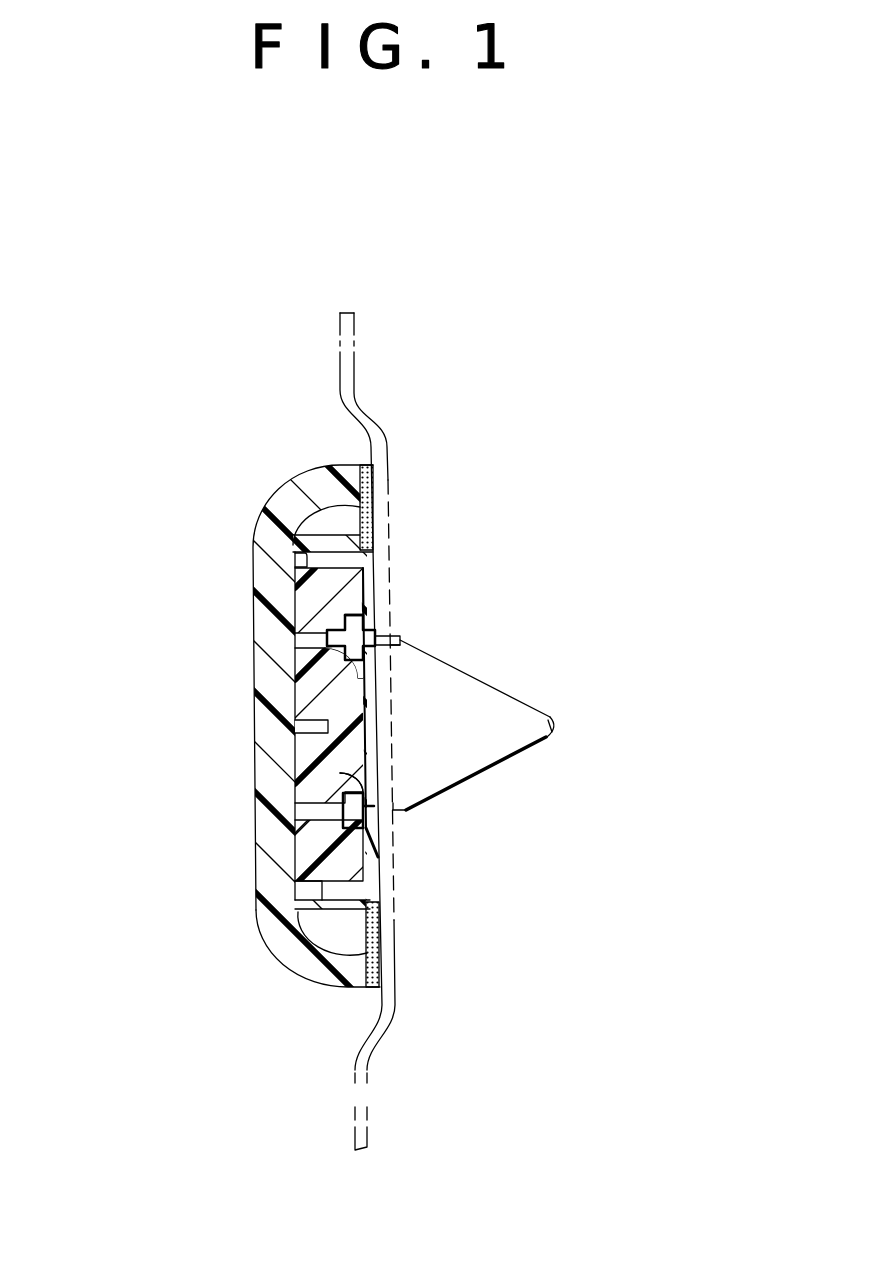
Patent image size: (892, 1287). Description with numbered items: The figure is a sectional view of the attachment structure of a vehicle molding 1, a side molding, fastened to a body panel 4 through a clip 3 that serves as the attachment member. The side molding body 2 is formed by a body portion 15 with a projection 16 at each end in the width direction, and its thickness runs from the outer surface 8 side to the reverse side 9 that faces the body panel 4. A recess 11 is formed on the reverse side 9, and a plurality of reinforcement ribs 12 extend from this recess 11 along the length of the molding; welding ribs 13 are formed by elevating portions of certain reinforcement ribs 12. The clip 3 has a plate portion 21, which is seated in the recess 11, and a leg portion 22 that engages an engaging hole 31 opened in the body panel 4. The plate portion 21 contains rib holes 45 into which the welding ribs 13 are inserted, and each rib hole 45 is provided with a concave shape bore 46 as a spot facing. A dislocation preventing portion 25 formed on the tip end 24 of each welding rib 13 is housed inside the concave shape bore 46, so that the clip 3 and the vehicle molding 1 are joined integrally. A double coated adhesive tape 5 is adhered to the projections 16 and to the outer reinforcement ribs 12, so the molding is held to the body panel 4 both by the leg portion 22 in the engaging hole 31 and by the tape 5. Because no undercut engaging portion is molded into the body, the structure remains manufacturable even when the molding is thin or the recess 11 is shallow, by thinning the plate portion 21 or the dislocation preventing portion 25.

The vehicle molding 1 is at (180, 328).
The side molding body 2 is at (241, 533).
The clip 3 is at (536, 767).
The body panel 4 is at (367, 407).
The double coated adhesive tape 5 is at (370, 514).
The outer surface 8 is at (240, 785).
The reverse side 9 is at (392, 936).
The recess 11 is at (290, 500).
The reinforcement rib 12 is at (258, 612).
The welding rib 13 is at (345, 615).
The body portion 15 is at (268, 673).
The projection 16 is at (322, 490).
The plate portion 21 is at (348, 748).
The leg portion 22 is at (552, 722).
The tip end 24 is at (368, 611).
The dislocation preventing portion 25 is at (372, 623).
The engaging hole 31 is at (383, 782).
The rib hole 45 is at (400, 645).
The concave shape bore 46 is at (398, 637).